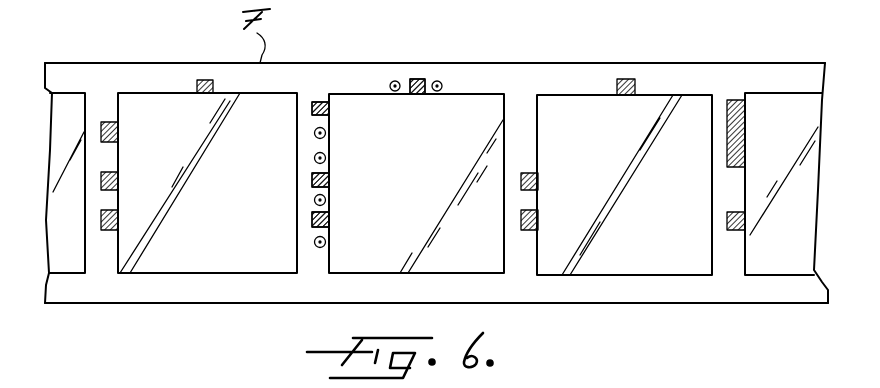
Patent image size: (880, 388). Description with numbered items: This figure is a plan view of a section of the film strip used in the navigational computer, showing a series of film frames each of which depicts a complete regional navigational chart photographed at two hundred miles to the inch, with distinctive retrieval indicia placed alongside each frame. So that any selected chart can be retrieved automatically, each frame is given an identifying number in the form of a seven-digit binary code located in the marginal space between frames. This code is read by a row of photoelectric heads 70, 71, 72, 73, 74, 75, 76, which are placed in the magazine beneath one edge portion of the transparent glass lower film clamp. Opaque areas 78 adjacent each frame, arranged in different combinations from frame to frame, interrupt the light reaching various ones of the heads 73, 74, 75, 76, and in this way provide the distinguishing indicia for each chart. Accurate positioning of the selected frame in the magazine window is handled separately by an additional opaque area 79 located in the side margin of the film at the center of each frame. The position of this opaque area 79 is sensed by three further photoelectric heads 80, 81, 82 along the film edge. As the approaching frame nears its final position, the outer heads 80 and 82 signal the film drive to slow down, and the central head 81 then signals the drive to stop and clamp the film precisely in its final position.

The photoelectric head 70 is at (326, 243).
The photoelectric head 71 is at (330, 222).
The photoelectric head 72 is at (326, 200).
The photoelectric head 73 is at (330, 180).
The photoelectric head 74 is at (326, 158).
The photoelectric head 75 is at (326, 133).
The photoelectric head 76 is at (330, 104).
The opaque area 78 is at (118, 215).
The opaque area 79 is at (198, 80).
The photoelectric head 80 is at (392, 80).
The photoelectric head 81 is at (416, 75).
The photoelectric head 82 is at (438, 80).